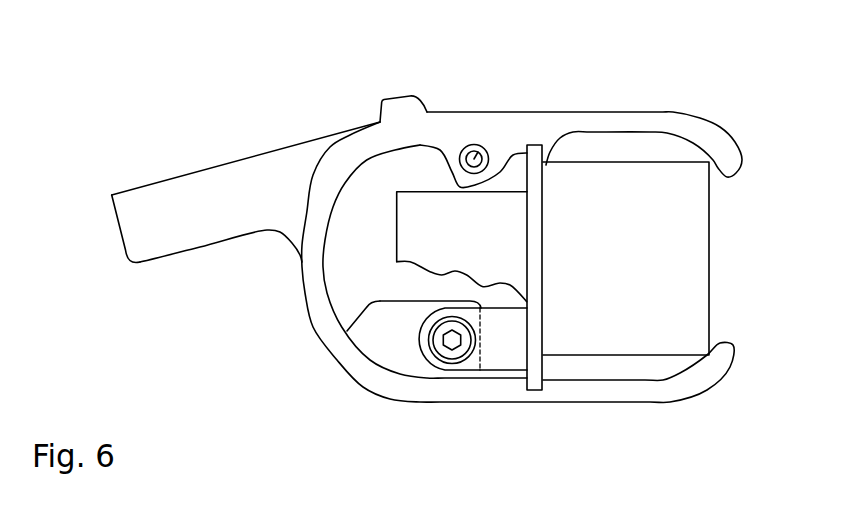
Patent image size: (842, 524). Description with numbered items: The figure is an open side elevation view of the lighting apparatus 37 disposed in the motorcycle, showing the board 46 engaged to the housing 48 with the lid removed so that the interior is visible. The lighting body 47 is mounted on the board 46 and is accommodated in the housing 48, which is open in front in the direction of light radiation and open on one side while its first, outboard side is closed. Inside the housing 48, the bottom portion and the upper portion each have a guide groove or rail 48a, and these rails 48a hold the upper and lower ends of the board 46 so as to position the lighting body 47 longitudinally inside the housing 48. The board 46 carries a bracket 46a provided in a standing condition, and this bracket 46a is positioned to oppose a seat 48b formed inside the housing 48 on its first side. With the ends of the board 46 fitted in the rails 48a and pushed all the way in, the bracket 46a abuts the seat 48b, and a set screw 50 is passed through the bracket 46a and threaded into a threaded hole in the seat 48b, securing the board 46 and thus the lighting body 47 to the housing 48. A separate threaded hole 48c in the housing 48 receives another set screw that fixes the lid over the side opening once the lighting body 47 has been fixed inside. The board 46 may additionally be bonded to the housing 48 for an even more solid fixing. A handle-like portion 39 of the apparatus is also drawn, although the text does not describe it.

The lighting apparatus 37 is at (326, 370).
The lever handle 39 is at (168, 242).
The board 46 is at (538, 326).
The bracket 46a is at (507, 360).
The lighting body 47 is at (697, 283).
The housing 48 is at (670, 122).
The rail 48a is at (538, 155).
The seat 48b is at (407, 365).
The threaded hole 48c is at (479, 152).
The set screw 50 is at (447, 353).